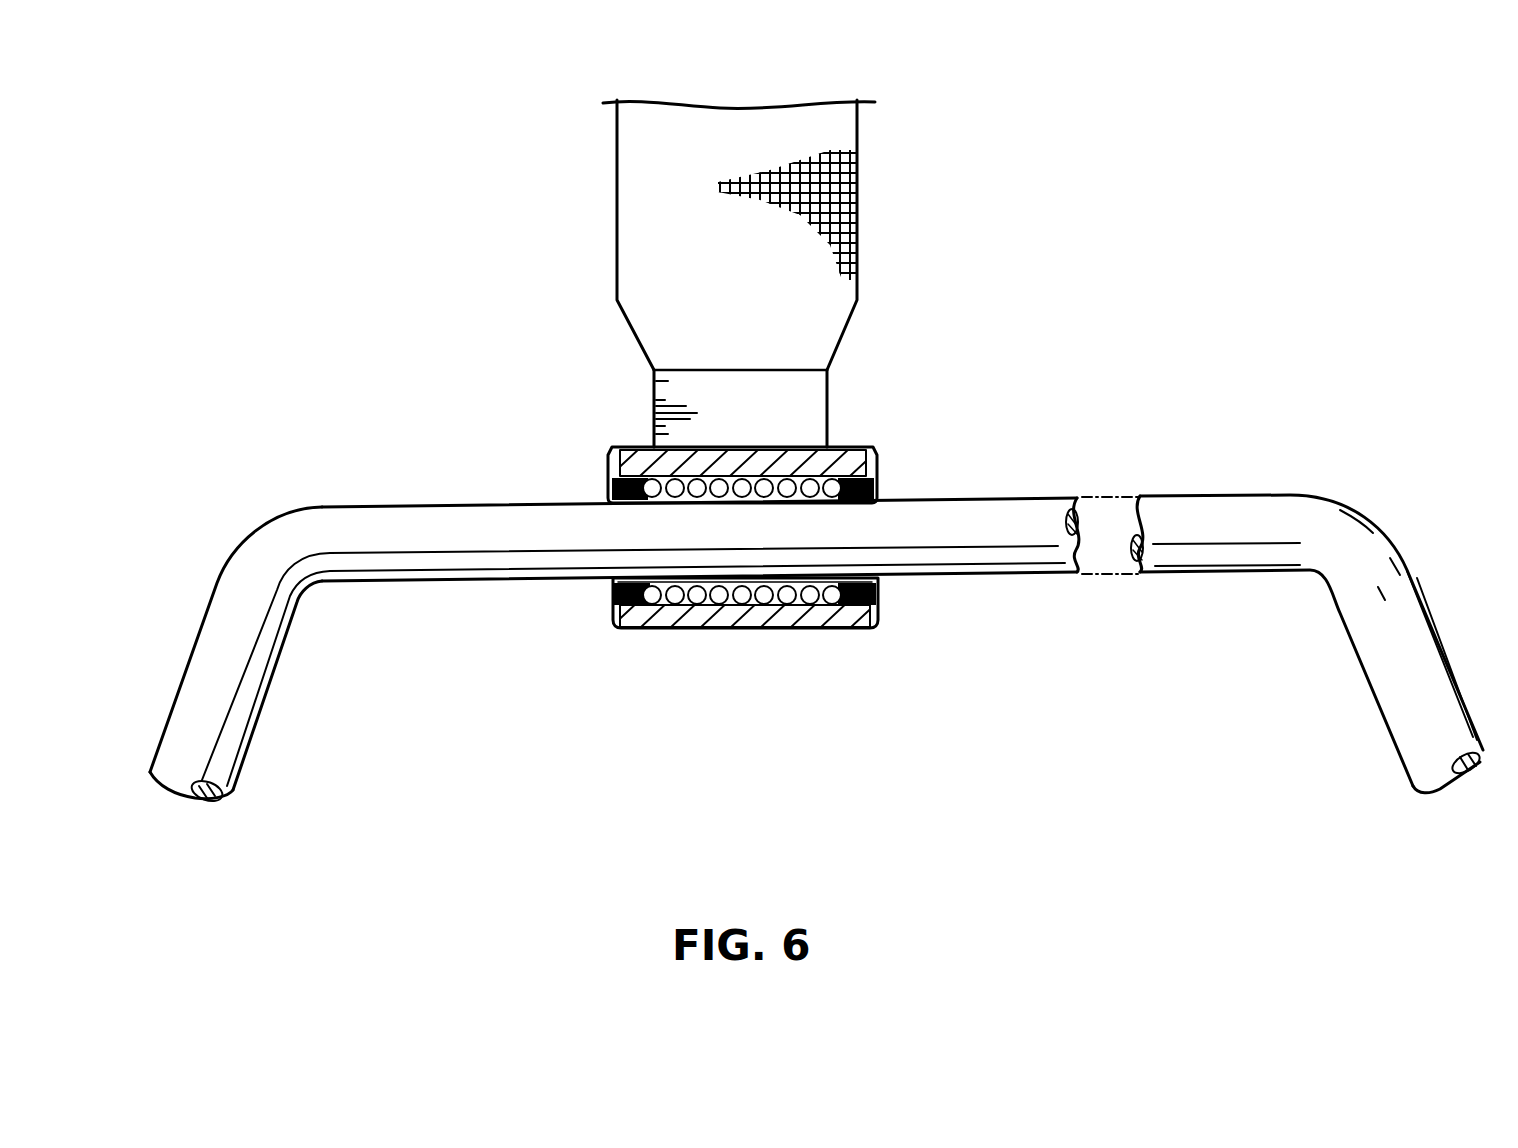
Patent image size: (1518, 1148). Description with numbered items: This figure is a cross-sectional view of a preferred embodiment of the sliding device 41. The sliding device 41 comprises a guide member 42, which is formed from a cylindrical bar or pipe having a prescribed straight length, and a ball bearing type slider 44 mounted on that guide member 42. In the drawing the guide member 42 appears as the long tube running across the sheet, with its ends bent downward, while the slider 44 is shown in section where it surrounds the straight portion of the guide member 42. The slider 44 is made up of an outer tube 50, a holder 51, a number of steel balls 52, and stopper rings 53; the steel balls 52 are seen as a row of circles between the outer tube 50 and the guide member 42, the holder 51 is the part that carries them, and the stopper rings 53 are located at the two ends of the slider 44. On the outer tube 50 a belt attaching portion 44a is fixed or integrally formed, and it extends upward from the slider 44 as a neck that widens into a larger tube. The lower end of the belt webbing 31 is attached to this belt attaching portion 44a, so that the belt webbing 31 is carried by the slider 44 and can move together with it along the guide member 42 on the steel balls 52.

The belt webbing 31 is at (644, 183).
The sliding device 41 is at (816, 530).
The guide member 42 is at (365, 527).
The ball bearing type slider 44 is at (852, 446).
The belt attaching portion 44a is at (667, 382).
The outer tube 50 is at (757, 628).
The holder 51 is at (853, 628).
The steel balls 52 is at (670, 628).
The stopper rings 53 is at (610, 596).